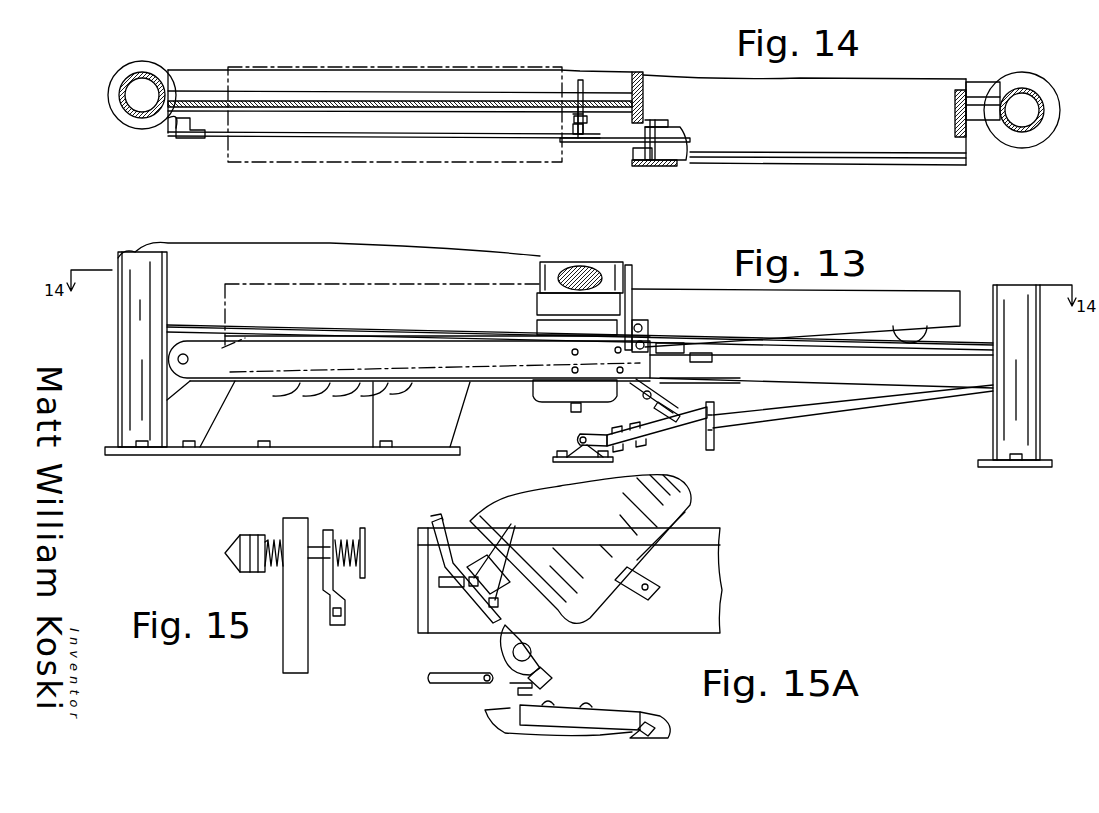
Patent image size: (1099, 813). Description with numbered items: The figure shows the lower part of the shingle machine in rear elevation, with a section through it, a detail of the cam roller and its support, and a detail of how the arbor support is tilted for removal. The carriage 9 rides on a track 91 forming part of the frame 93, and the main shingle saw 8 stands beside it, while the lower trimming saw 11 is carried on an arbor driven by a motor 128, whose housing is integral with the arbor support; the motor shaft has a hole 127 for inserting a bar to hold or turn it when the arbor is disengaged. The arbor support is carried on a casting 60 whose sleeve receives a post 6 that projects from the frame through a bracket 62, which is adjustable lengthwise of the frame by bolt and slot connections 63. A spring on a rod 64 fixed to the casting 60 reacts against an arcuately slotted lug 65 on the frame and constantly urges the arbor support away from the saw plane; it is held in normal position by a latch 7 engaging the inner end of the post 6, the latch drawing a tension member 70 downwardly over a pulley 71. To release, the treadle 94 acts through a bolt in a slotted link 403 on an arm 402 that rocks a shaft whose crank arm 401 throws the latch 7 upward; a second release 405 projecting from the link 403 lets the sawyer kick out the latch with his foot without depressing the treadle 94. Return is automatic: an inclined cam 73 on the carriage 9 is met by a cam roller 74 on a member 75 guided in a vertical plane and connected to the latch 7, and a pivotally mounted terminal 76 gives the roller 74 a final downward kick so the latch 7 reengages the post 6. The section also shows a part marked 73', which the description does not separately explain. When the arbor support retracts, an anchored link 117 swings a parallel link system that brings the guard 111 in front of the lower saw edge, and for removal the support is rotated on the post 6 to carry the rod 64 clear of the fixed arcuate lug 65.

In FIG. 14, the post 6 is at (653, 122).
In FIG. 13, the post 6 is at (641, 400).
In FIG. 15A, the post 6 is at (530, 652).
In FIG. 14, the latch 7 is at (688, 138).
In FIG. 13, the latch 7 is at (683, 378).
In FIG. 13, the shingle saw 8 is at (310, 265).
In FIG. 14, the carriage 9 is at (643, 78).
In FIG. 13, the carriage 9 is at (636, 286).
In FIG. 13, the lower trimming saw 11 is at (612, 270).
In FIG. 15A, the casting 60 is at (512, 638).
In FIG. 13, the bracket 62 is at (712, 357).
In FIG. 15A, the bracket 62 is at (392, 622).
In FIG. 15A, the bolt and slot connections 63 is at (439, 582).
In FIG. 15A, the rod 64 is at (554, 680).
In FIG. 13, the arcuately slotted lug 65 is at (645, 407).
In FIG. 15A, the arcuately slotted lug 65 is at (508, 686).
In FIG. 14, the tension member 70 is at (583, 86).
In FIG. 14, the pulley 71 is at (573, 137).
In FIG. 14, the cam 73 is at (828, 173).
In FIG. 13, the cam 73 is at (796, 318).
In FIG. 14, the rail 73' is at (405, 173).
In FIG. 14, the cam roller 74 is at (632, 164).
In FIG. 13, the cam roller 74 is at (664, 346).
In FIG. 15, the cam roller 74 is at (226, 548).
In FIG. 14, the member 75 is at (512, 145).
In FIG. 13, the member 75 is at (410, 358).
In FIG. 15, the member 75 is at (290, 655).
In FIG. 13, the pivotally mounted terminal 76 is at (648, 332).
In FIG. 14, the track 91 is at (440, 92).
In FIG. 13, the track 91 is at (968, 343).
In FIG. 15A, the track 91 is at (720, 550).
In FIG. 13, the frame 93 is at (1040, 355).
In FIG. 13, the treadle 94 is at (868, 418).
In FIG. 15A, the treadle 94 is at (500, 724).
In FIG. 13, the saw guard 111 is at (562, 272).
In FIG. 15A, the link 117 is at (440, 518).
In FIG. 13, the hole 127 is at (571, 410).
In FIG. 15A, the hole 127 is at (650, 587).
In FIG. 13, the motor 128 is at (528, 395).
In FIG. 15A, the motor 128 is at (580, 549).
In FIG. 14, the crank arm 401 is at (670, 128).
In FIG. 13, the arm 402 is at (694, 440).
In FIG. 15A, the arm 402 is at (432, 680).
In FIG. 13, the slotted link 403 is at (716, 436).
In FIG. 13, the second release 405 is at (712, 452).